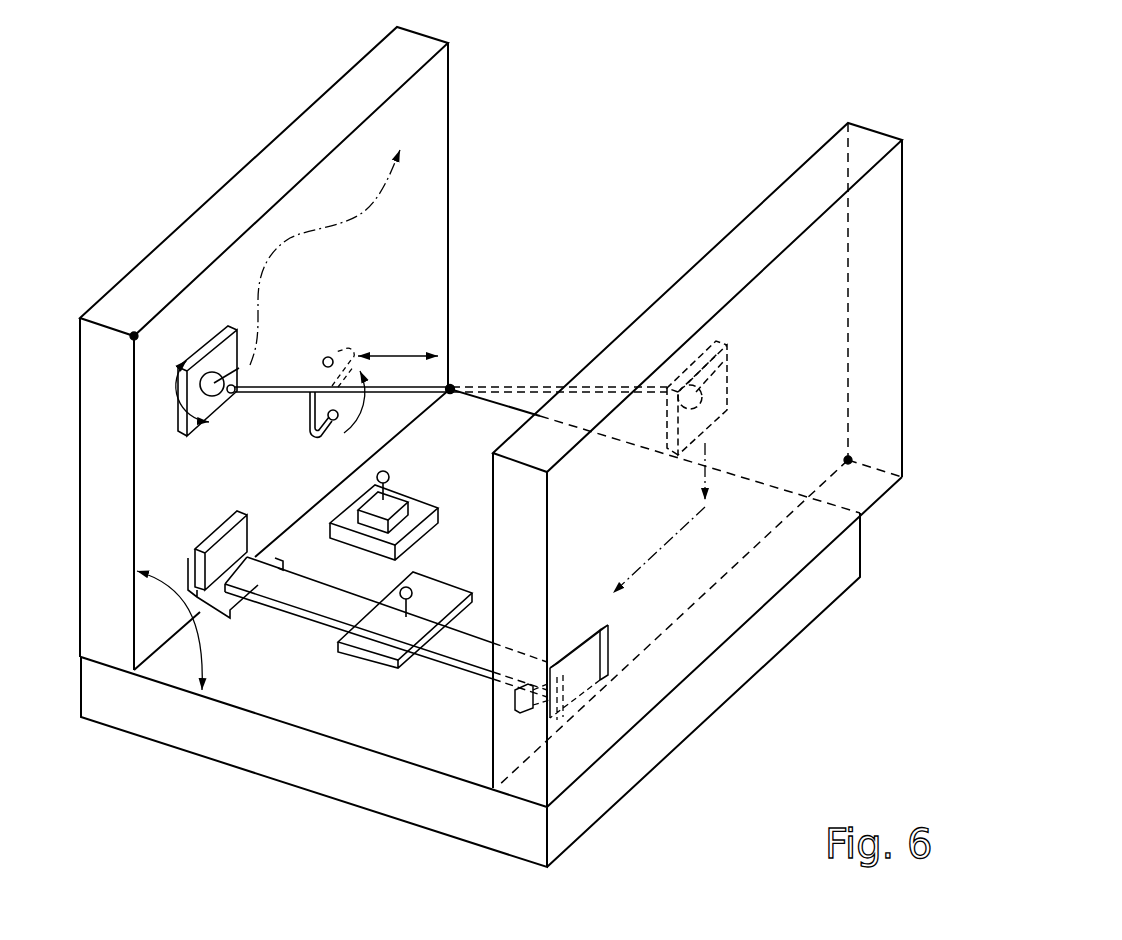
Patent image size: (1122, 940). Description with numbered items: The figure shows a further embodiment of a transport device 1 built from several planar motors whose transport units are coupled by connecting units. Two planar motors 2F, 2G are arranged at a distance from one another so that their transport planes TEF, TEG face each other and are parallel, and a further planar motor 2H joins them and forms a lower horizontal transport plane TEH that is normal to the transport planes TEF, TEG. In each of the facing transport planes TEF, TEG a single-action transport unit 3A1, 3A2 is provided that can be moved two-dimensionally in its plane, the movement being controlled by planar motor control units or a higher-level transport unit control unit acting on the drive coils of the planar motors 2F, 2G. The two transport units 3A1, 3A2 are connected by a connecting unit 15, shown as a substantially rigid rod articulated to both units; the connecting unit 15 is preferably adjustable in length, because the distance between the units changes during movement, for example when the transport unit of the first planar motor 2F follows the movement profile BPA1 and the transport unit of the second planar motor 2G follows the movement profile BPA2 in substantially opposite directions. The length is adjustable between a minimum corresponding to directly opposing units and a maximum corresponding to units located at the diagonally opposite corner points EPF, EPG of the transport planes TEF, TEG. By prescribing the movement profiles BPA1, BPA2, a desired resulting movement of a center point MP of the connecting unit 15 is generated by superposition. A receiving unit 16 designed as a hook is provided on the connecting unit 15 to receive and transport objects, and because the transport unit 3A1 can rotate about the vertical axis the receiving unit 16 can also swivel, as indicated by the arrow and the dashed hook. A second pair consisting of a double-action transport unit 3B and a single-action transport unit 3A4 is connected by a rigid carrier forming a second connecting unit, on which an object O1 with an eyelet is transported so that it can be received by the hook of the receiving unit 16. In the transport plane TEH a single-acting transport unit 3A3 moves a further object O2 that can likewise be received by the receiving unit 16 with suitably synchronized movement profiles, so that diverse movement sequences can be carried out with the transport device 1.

The transport device 1 is at (595, 130).
The first planar motor 2F is at (238, 170).
The second planar motor 2G is at (875, 128).
The further planar motor 2H is at (205, 723).
The single-action transport unit 3A1 is at (208, 333).
The single-action transport unit 3A2 is at (705, 360).
The single-acting transport unit 3A3 is at (417, 512).
The single-action transport unit 3A4 is at (557, 717).
The double-action transport unit 3B is at (223, 557).
The connecting unit 15 is at (522, 388).
The receiving unit 16 is at (305, 420).
The center point MP is at (452, 385).
The corner point EPF is at (134, 336).
The corner point EPG is at (848, 460).
The transport plane TEF is at (437, 238).
The transport plane TEG is at (785, 178).
The transport plane TEH is at (300, 682).
The movement profile BPA1 is at (360, 213).
The movement profile BPA2 is at (647, 560).
The object O1 is at (383, 632).
The further object O2 is at (386, 508).